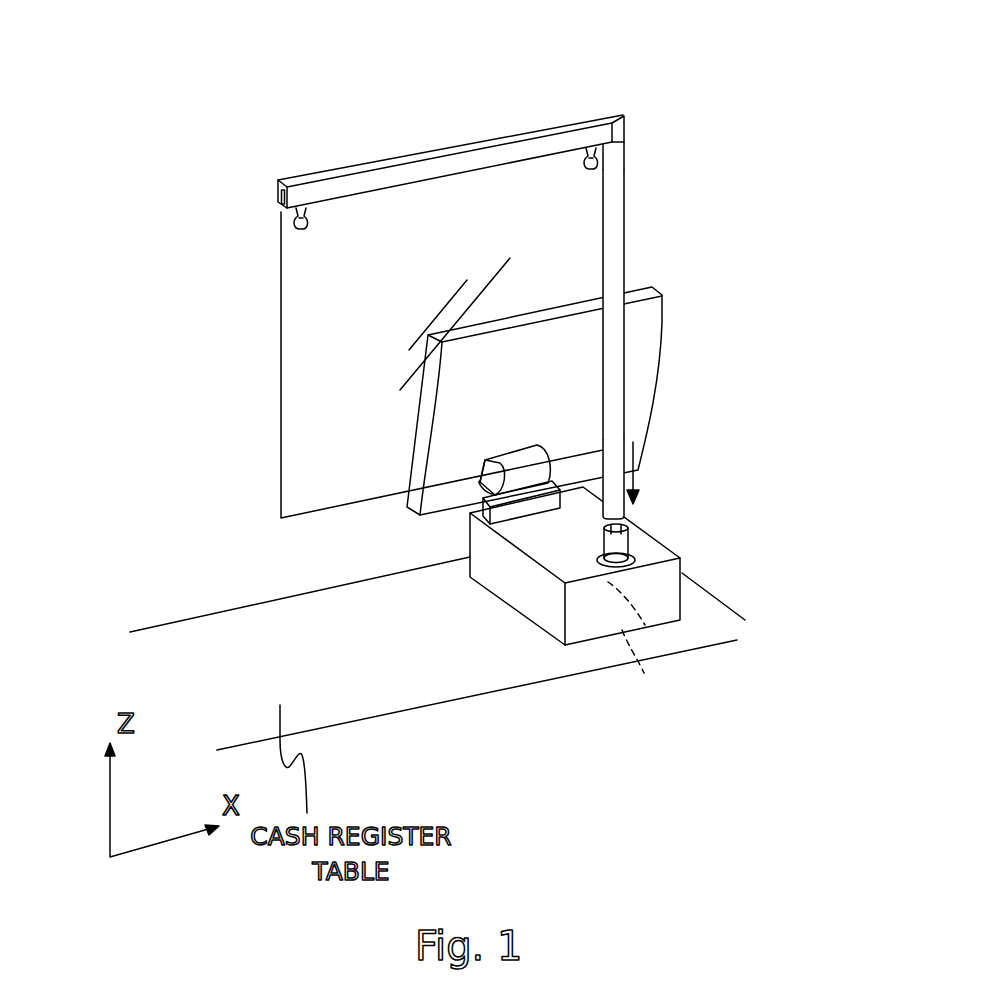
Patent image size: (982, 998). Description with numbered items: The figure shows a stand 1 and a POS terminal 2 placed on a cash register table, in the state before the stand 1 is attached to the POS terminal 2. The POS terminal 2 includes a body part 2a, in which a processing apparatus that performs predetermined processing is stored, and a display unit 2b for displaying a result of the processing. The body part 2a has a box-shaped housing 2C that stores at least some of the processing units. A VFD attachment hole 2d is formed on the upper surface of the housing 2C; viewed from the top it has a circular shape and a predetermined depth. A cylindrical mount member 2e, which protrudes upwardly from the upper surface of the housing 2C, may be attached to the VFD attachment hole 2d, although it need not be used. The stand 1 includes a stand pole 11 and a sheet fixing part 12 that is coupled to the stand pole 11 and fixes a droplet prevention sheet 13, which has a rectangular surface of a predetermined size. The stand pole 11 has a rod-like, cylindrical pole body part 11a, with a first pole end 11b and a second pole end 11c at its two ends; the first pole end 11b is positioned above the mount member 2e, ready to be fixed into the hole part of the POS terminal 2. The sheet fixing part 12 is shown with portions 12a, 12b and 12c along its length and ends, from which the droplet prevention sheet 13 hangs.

The stand 1 is at (180, 46).
The POS terminal 2 is at (589, 526).
The body part 2a is at (640, 552).
The display unit 2b is at (648, 368).
The housing 2C is at (667, 598).
The VFD attachment hole 2d is at (636, 647).
The mount member 2e is at (632, 526).
The stand pole 11 is at (567, 435).
The pole body part 11a is at (622, 347).
The first pole end 11b is at (613, 510).
The second pole end 11c is at (622, 147).
The sheet fixing part 12 is at (418, 127).
The top surface of bar 12a is at (470, 163).
The right end of bar 12b is at (603, 138).
The left end of bar 12c is at (287, 185).
The droplet prevention sheet 13 is at (303, 402).